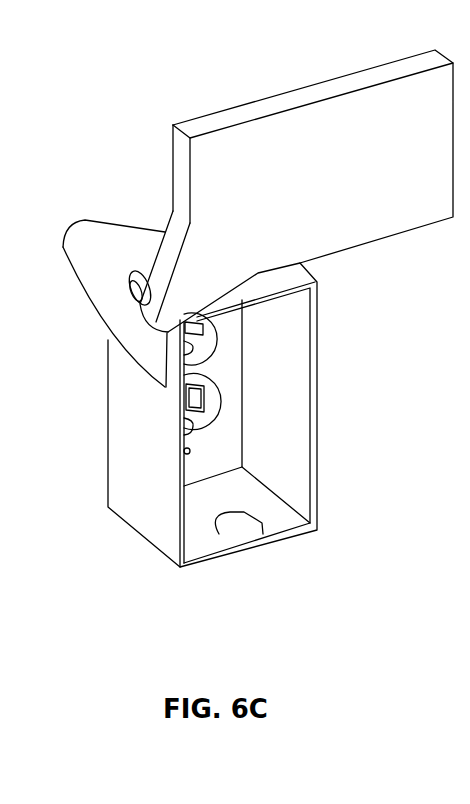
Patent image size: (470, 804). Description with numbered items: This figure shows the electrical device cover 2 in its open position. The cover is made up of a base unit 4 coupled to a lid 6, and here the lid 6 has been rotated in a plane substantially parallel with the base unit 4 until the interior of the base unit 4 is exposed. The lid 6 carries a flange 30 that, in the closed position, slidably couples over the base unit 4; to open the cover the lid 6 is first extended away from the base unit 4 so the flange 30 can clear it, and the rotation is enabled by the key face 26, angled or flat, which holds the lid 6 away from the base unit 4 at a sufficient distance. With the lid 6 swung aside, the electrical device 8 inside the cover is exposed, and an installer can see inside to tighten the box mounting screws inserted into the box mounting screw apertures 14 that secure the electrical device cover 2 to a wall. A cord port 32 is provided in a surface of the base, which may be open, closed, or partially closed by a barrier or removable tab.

The electrical device cover 2 is at (152, 163).
The base unit 4 is at (145, 482).
The lid 6 is at (325, 152).
The electrical device 8 is at (215, 400).
The box mounting screw apertures 14 is at (191, 455).
The key face 26 is at (145, 275).
The flange 30 is at (215, 123).
The cord port 32 is at (242, 525).